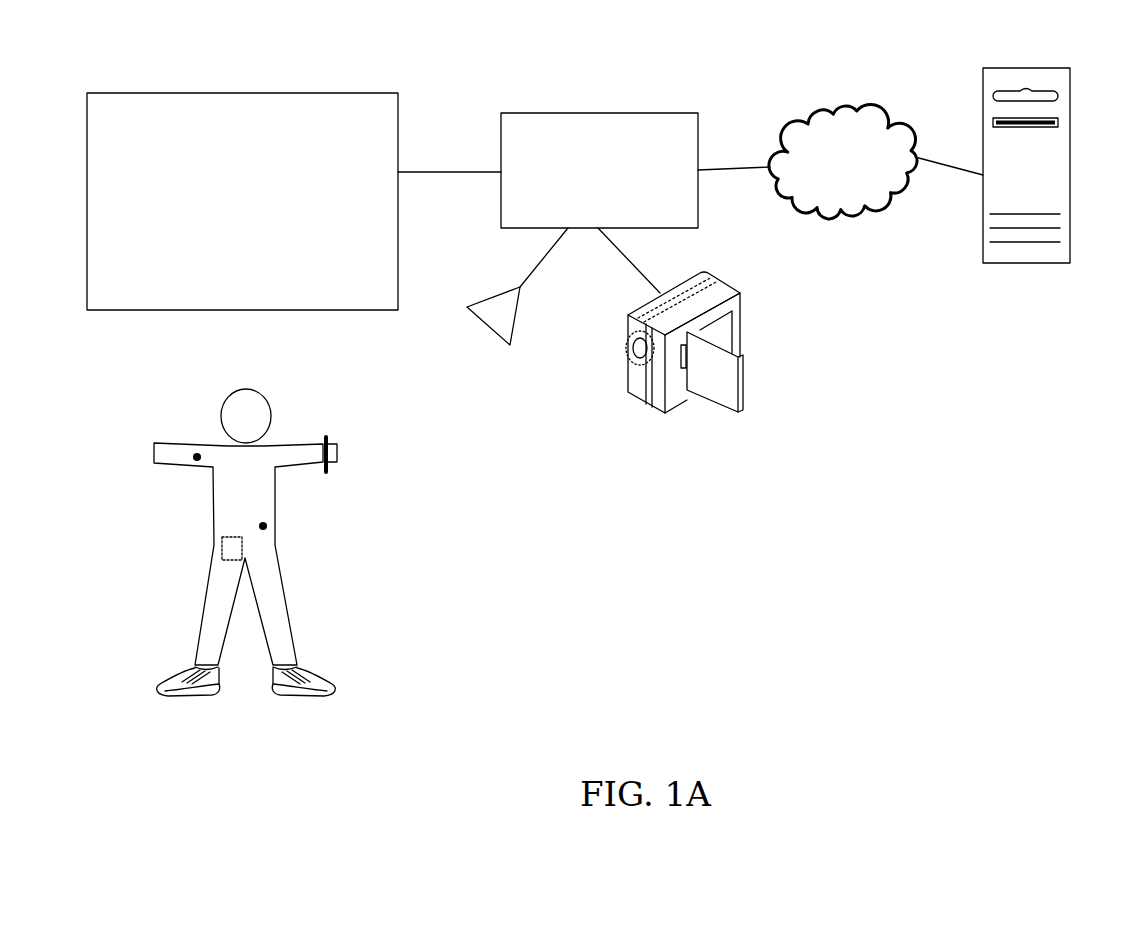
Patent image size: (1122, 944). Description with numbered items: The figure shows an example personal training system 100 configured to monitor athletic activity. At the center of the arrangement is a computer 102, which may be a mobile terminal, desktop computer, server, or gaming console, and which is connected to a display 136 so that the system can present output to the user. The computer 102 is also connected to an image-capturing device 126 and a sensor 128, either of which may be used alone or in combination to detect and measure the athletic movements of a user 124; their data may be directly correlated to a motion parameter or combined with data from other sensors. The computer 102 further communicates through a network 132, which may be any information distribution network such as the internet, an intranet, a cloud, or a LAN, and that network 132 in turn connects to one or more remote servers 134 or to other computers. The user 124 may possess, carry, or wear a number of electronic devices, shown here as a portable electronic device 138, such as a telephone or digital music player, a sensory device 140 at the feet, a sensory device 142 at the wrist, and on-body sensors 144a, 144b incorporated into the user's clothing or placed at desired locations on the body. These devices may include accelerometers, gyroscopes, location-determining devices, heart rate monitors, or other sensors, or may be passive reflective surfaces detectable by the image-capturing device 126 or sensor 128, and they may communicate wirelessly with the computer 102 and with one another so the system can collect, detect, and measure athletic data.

The personal training system 100 is at (586, 32).
The computer 102 is at (586, 189).
The user 124 is at (250, 531).
The image-capturing device 126 is at (745, 293).
The sensor 128 is at (483, 295).
The network 132 is at (843, 161).
The remote server 134 is at (972, 257).
The display 136 is at (230, 220).
The portable electronic device 138 is at (218, 547).
The sensory device 140 is at (172, 663).
The sensory device 142 is at (330, 433).
The on-body sensor 144a is at (192, 462).
The on-body sensor 144b is at (268, 530).